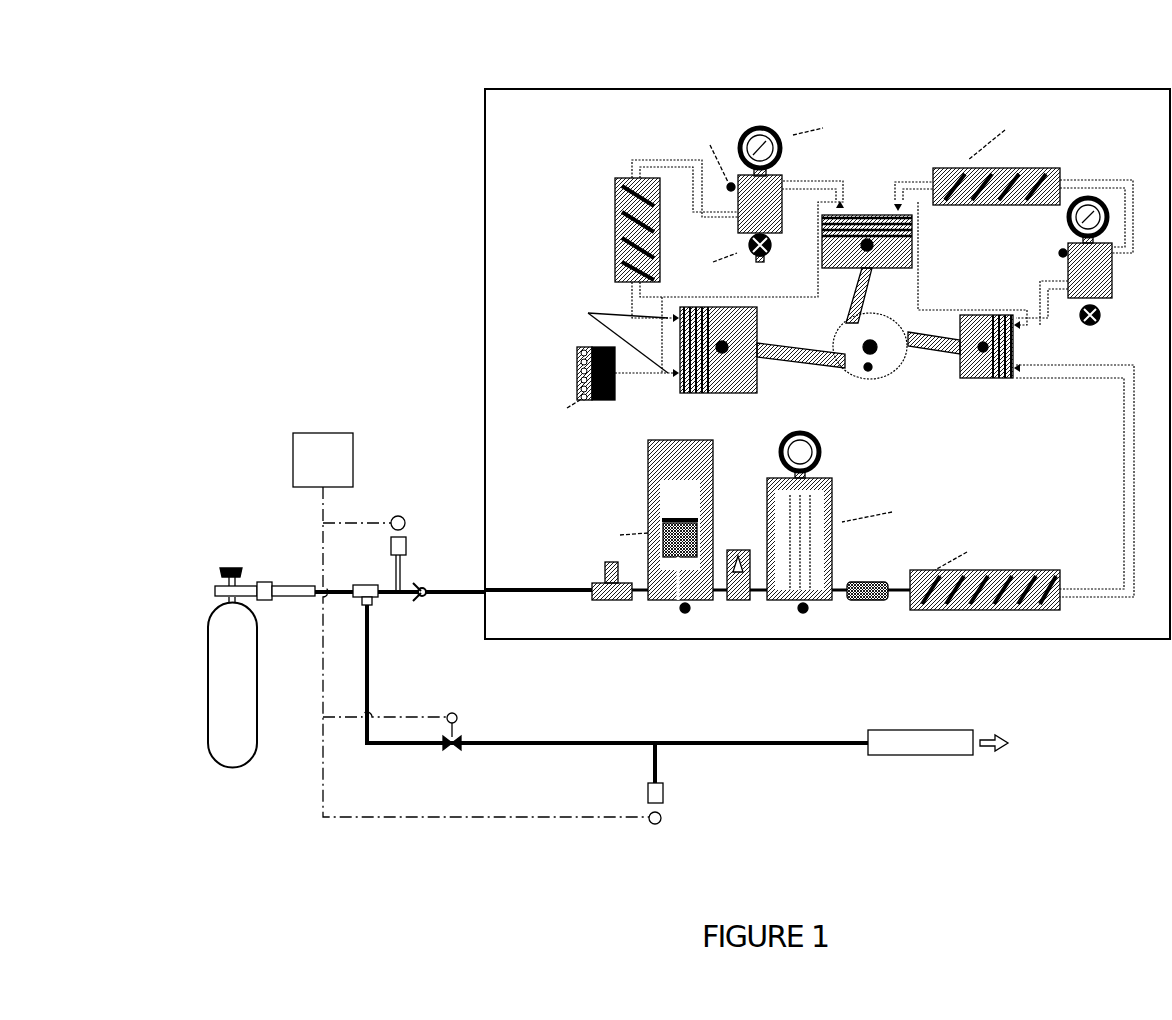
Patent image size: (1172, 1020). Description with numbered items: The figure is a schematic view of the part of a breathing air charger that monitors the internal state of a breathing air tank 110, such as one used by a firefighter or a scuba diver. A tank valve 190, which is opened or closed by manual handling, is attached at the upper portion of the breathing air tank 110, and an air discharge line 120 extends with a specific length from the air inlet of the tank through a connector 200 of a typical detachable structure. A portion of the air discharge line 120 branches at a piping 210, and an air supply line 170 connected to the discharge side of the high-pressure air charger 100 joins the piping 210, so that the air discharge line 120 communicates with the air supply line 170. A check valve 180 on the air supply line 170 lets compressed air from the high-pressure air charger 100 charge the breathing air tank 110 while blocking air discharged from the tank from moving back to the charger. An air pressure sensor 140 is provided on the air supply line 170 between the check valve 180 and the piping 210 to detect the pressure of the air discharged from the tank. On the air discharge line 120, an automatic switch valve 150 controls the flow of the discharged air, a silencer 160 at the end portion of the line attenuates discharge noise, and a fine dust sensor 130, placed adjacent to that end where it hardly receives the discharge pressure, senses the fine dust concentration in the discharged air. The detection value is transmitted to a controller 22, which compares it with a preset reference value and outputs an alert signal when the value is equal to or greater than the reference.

The high-pressure air charger 100 is at (472, 112).
The controller 22 is at (310, 447).
The breathing air tank 110 is at (230, 752).
The air discharge line 120 is at (347, 590).
The fine dust sensor 130 is at (663, 803).
The air pressure sensor 140 is at (400, 515).
The automatic switch valve 150 is at (456, 714).
The silencer 160 is at (897, 745).
The air supply line 170 is at (453, 587).
The check valve 180 is at (422, 598).
The tank valve 190 is at (220, 572).
The connector 200 is at (298, 598).
The piping 210 is at (373, 597).